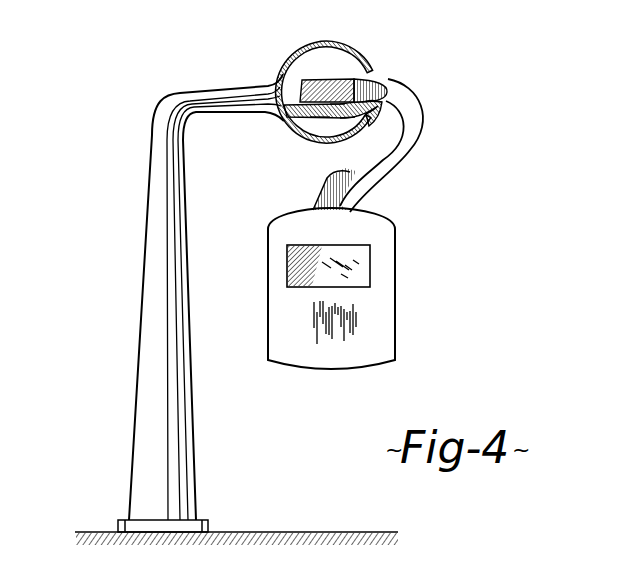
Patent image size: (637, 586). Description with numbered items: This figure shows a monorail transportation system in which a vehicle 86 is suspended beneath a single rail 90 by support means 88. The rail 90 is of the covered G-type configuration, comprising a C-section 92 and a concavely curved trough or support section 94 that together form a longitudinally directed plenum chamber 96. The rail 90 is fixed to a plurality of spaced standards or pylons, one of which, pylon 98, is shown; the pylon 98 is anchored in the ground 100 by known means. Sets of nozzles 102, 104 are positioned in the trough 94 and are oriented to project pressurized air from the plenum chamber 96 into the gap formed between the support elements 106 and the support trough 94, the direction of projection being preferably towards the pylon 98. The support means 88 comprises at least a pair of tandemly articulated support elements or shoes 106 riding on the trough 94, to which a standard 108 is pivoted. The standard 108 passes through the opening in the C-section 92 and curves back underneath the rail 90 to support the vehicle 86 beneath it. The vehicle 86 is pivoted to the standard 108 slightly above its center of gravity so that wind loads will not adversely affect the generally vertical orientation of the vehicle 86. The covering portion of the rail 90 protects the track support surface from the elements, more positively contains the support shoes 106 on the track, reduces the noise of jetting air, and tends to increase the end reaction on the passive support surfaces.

The vehicle 86 is at (395, 303).
The support means 88 is at (426, 107).
The rail 90 is at (365, 48).
The C-section 92 is at (320, 120).
The support section 94 is at (380, 108).
The plenum chamber 96 is at (352, 122).
The pylon 98 is at (150, 213).
The ground 100 is at (83, 531).
The nozzles 102 is at (330, 122).
The nozzles 104 is at (340, 124).
The support elements 106 is at (397, 82).
The standard 108 is at (338, 178).